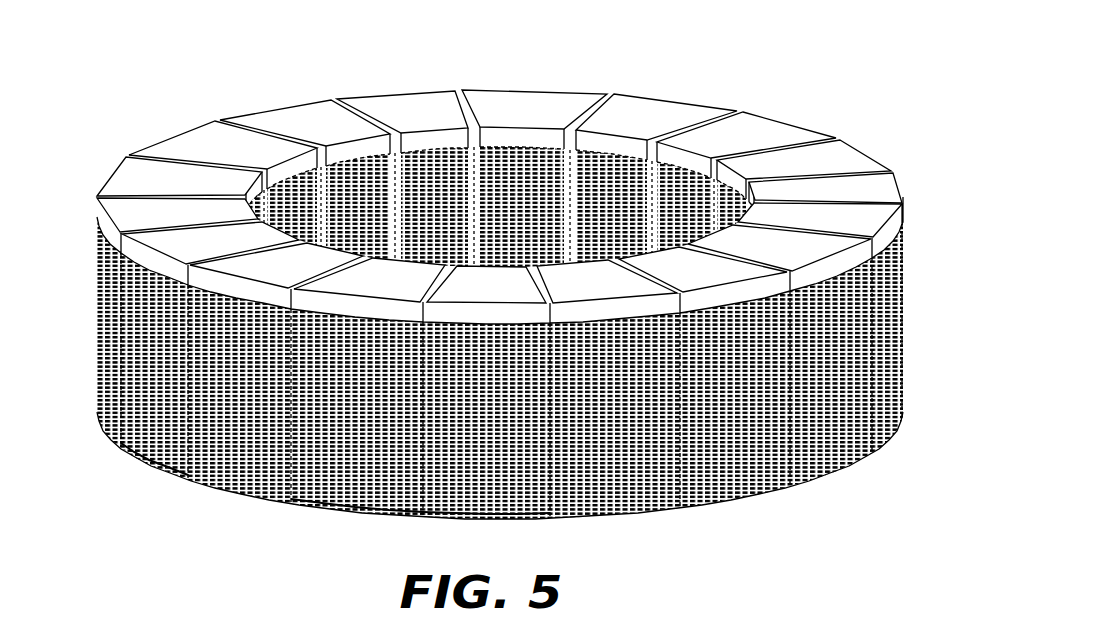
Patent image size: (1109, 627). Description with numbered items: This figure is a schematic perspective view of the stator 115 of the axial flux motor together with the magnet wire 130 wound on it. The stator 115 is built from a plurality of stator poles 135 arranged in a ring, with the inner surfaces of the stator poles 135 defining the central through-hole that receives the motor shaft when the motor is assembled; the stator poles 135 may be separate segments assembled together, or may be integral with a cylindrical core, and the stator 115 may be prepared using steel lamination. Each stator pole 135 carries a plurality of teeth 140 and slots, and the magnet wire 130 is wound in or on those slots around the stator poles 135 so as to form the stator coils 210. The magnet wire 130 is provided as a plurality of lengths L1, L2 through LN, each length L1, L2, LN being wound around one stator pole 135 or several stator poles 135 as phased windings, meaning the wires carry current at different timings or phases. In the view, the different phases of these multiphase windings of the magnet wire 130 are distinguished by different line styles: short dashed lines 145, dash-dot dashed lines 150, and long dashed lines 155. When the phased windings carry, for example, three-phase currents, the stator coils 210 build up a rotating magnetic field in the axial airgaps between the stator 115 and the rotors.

The stator 115 is at (863, 180).
The magnet wire 130 is at (907, 300).
The stator poles 135 is at (345, 148).
The teeth 140 is at (149, 180).
The short dashed lines 145 is at (738, 186).
The dash-dot dashed lines 150 is at (633, 150).
The long dashed lines 155 is at (423, 148).
The stator coils 210 is at (542, 385).
The length of magnet wire L1 is at (363, 517).
The length of magnet wire L2 is at (533, 523).
The length of magnet wire LN is at (163, 468).